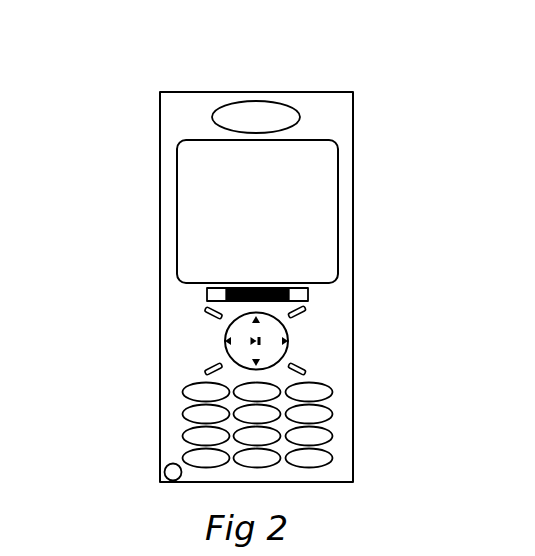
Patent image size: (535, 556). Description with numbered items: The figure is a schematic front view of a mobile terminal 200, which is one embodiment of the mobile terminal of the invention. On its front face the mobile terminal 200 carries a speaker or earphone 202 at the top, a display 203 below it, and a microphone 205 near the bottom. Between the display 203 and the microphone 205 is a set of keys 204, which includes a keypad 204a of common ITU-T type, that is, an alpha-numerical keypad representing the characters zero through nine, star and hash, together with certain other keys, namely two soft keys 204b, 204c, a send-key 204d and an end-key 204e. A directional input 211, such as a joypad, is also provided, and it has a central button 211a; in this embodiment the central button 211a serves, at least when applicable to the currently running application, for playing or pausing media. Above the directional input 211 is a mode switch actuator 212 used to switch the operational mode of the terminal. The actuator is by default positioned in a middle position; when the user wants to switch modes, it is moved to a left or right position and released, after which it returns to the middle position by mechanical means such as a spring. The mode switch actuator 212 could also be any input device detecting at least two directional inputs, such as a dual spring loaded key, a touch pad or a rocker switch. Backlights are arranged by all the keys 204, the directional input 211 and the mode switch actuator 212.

The mobile terminal 200 is at (127, 95).
The speaker or earphone 202 is at (248, 109).
The display 203 is at (187, 198).
The set of keys 204 is at (152, 384).
The keypad 204a is at (327, 407).
The soft key 204b is at (205, 311).
The soft key 204c is at (303, 310).
The send-key 204d is at (205, 371).
The end-key 204e is at (303, 371).
The microphone 205 is at (172, 470).
The directional input 211 is at (238, 331).
The central button 211a is at (261, 341).
The mode switch actuator 212 is at (304, 296).